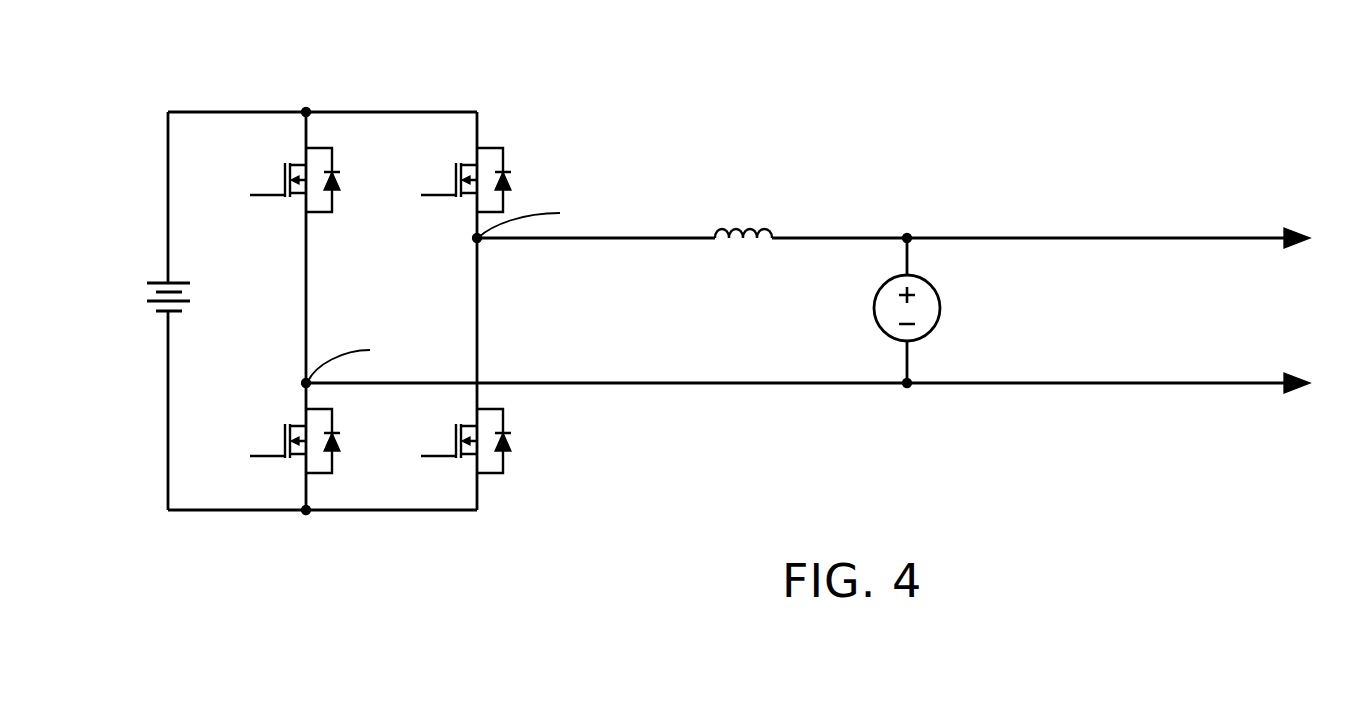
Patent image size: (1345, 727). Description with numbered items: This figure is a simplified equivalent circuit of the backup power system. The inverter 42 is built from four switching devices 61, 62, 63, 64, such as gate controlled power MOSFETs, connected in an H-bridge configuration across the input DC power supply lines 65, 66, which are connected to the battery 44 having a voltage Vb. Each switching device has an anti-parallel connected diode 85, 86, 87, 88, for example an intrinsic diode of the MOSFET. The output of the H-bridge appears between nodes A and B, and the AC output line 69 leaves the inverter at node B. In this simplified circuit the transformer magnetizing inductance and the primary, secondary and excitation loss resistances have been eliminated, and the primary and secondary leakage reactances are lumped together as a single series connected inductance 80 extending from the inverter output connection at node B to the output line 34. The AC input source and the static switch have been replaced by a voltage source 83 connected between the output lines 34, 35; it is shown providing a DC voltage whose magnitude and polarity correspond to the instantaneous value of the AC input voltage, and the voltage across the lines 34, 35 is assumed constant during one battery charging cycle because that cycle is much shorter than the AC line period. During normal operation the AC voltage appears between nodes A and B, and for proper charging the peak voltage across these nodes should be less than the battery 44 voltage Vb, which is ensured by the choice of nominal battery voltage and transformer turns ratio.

The inverter 42 is at (375, 110).
The battery 44 is at (156, 309).
The switching device 61 is at (284, 186).
The switching device 62 is at (284, 446).
The switching device 63 is at (455, 186).
The switching device 64 is at (453, 437).
The input DC power supply line 65 is at (208, 112).
The input DC power supply line 66 is at (213, 510).
The AC output line 69 is at (525, 240).
The single inductance 80 is at (750, 241).
The voltage source 83 is at (873, 311).
The anti-parallel connected diode 85 is at (338, 447).
The anti-parallel connected diode 86 is at (508, 181).
The anti-parallel connected diode 87 is at (508, 445).
The anti-parallel connected diode 88 is at (338, 182).
The output line 34 is at (1127, 238).
The output line 35 is at (1197, 385).